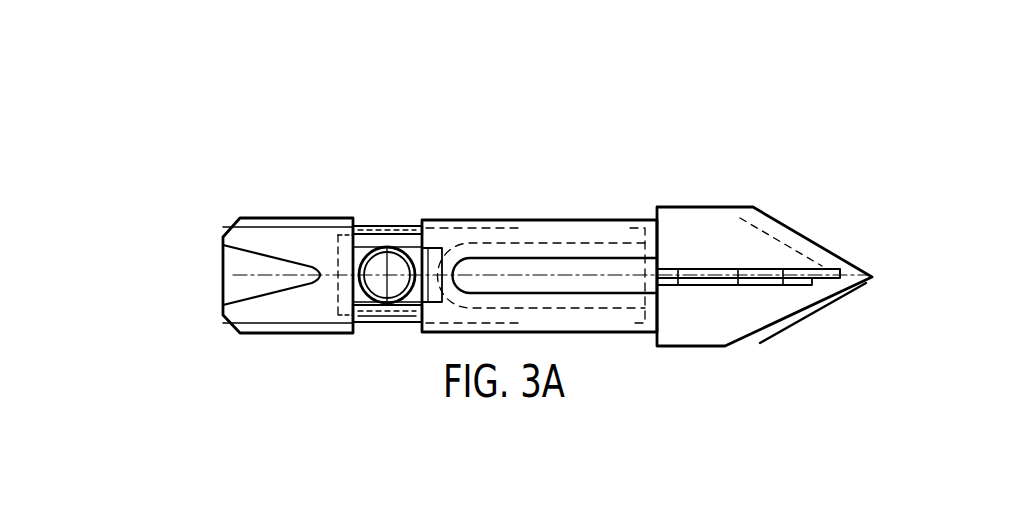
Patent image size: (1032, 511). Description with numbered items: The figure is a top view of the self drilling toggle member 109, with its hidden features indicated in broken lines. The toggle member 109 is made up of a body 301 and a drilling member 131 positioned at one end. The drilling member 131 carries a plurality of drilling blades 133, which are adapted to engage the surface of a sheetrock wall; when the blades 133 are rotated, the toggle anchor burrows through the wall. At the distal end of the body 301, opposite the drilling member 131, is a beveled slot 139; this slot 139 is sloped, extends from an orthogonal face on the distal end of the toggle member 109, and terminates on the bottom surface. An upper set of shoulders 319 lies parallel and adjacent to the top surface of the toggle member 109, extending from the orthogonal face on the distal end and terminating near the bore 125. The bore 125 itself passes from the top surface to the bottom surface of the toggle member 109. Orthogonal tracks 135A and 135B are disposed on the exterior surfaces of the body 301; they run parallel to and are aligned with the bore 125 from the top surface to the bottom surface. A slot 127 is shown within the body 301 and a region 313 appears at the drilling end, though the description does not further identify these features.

The self drilling toggle member 109 is at (552, 198).
The bore 125 is at (384, 277).
The slot 127 is at (578, 273).
The drilling member 131 is at (843, 295).
The drilling blades 133 is at (743, 288).
The orthogonal track 135A is at (365, 227).
The orthogonal track 135B is at (382, 322).
The beveled slot 139 is at (243, 282).
The body 301 is at (480, 214).
The head 313 is at (605, 238).
The upper set of shoulders 319 is at (240, 218).